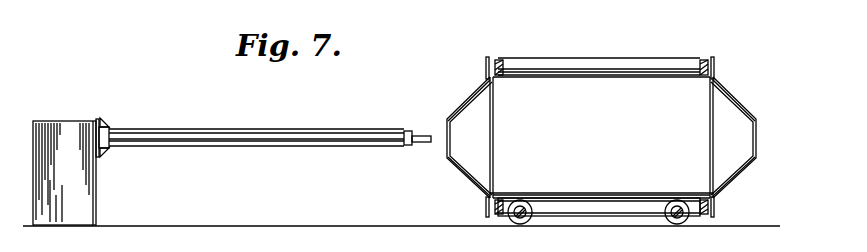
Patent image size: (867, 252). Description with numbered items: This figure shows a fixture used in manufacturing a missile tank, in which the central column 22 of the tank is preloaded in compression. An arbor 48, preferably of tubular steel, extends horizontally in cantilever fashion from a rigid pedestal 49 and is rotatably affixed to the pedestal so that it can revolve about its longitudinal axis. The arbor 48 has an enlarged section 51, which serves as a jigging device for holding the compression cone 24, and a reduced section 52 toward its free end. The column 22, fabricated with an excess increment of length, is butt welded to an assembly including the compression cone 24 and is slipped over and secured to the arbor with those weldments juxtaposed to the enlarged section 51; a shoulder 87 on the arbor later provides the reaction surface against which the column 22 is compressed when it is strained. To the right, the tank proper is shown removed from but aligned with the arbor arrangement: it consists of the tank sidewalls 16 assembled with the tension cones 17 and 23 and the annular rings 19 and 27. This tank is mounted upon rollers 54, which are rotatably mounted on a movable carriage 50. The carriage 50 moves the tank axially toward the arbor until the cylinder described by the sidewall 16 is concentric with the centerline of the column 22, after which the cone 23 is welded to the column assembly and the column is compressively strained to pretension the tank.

The tank sidewalls 16 is at (548, 193).
The tension cone 17 is at (733, 96).
The annular ring 19 is at (707, 98).
The central column 22 is at (243, 148).
The tension cone 23 is at (464, 97).
The compression cone 24 is at (106, 152).
The annular ring 27 is at (494, 103).
The arbor 48 is at (411, 146).
The pedestal 49 is at (96, 200).
The carriage 50 is at (590, 215).
The enlarged section 51 is at (104, 121).
The reduced section 52 is at (420, 131).
The rollers 54 is at (490, 58).
The shoulder 87 is at (116, 142).